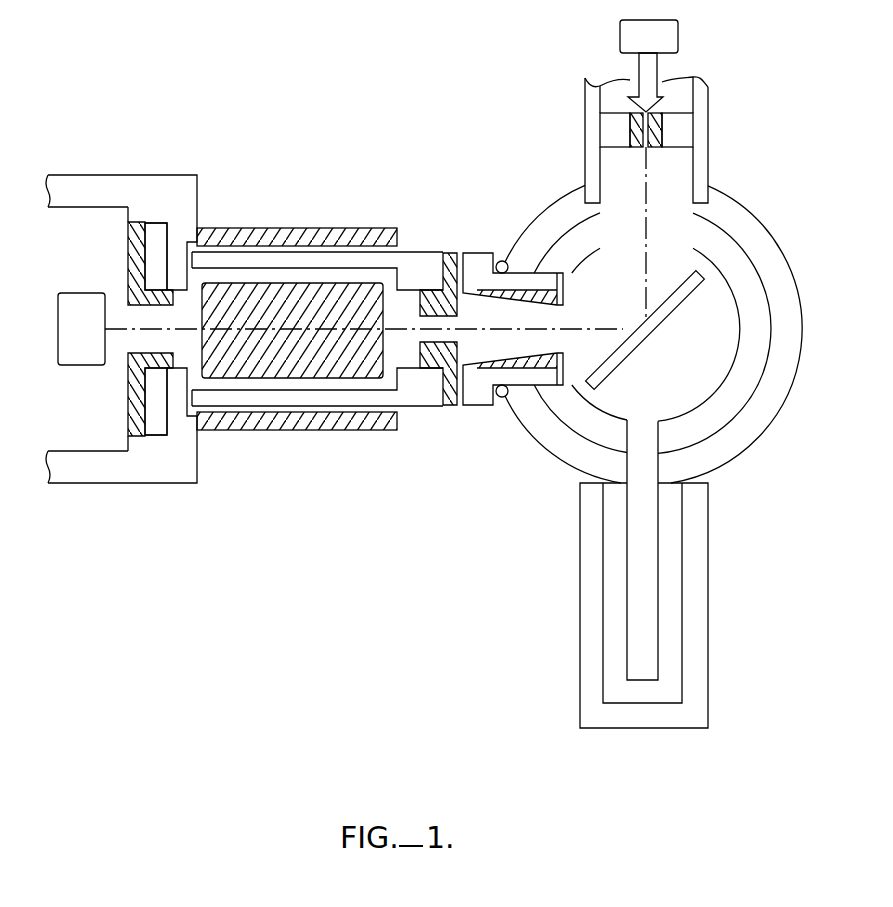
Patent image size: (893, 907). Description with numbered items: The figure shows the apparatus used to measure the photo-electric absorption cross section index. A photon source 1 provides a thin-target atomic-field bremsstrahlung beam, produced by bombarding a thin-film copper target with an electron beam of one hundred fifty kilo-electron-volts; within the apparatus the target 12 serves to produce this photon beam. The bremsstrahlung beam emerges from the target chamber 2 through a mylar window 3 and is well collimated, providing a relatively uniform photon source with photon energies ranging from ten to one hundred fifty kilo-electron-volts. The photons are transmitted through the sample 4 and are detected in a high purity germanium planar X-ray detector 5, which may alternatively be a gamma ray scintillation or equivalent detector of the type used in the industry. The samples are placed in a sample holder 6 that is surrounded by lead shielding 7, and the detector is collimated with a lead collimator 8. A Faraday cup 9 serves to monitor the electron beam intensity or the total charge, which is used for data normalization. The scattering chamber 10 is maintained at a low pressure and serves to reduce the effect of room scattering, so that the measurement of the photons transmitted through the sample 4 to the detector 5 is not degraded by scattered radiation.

The photon source 1 is at (678, 33).
The target chamber 2 is at (757, 221).
The mylar window 3 is at (478, 406).
The sample 4 is at (323, 297).
The high purity germanium planar X-ray detector 5 is at (72, 292).
The sample holder 6 is at (387, 398).
The lead shielding 7 is at (297, 430).
The lead collimator 8 is at (128, 258).
The Faraday cup 9 is at (580, 651).
The scattering chamber 10 is at (523, 235).
The target 12 is at (650, 337).